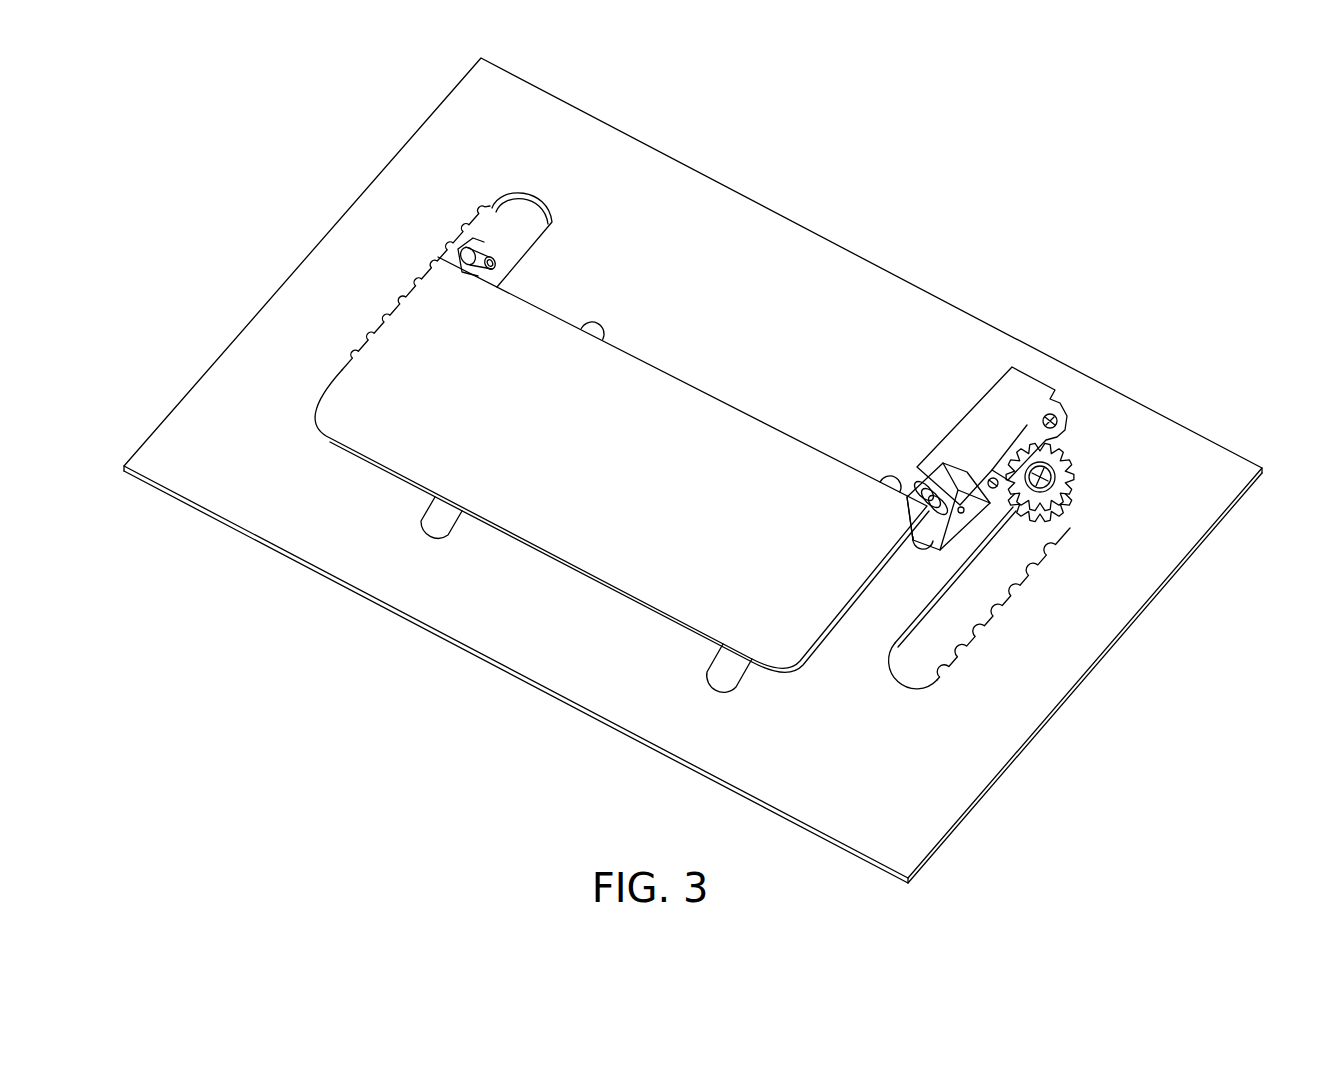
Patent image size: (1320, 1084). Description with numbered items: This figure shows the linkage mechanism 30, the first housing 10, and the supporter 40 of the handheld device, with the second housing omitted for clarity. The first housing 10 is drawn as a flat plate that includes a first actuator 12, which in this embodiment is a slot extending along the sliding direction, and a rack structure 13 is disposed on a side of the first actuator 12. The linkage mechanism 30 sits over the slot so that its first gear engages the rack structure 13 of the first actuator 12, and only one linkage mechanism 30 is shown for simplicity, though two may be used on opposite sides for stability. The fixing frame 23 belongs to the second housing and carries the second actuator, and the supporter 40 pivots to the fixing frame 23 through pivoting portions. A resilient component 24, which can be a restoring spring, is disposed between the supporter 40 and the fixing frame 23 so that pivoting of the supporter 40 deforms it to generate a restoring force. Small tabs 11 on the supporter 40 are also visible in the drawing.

The first housing 10 is at (786, 236).
The positioning feet 11 is at (426, 524).
The first actuator 12 is at (527, 222).
The rack structure 13 is at (447, 250).
The fixing frame 23 is at (1023, 390).
The resilient component 24 is at (925, 477).
The linkage mechanism 30 is at (1088, 450).
The supporter 40 is at (382, 443).